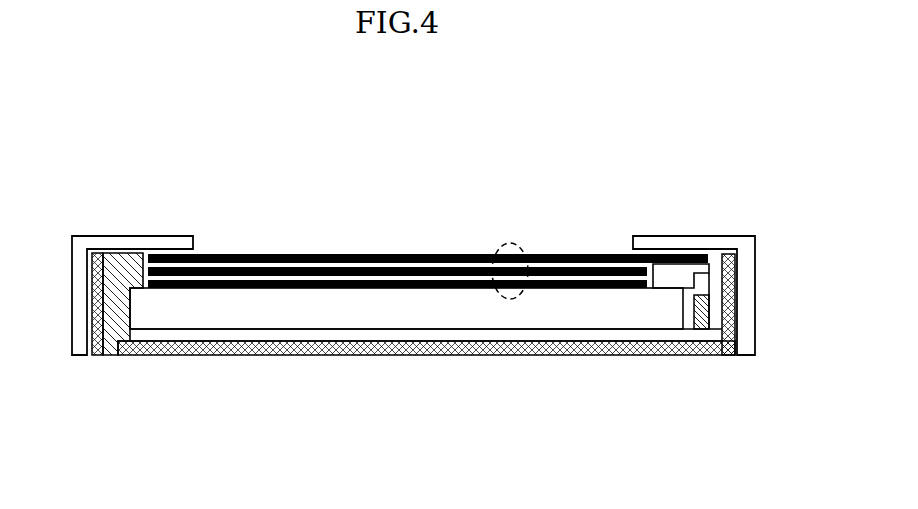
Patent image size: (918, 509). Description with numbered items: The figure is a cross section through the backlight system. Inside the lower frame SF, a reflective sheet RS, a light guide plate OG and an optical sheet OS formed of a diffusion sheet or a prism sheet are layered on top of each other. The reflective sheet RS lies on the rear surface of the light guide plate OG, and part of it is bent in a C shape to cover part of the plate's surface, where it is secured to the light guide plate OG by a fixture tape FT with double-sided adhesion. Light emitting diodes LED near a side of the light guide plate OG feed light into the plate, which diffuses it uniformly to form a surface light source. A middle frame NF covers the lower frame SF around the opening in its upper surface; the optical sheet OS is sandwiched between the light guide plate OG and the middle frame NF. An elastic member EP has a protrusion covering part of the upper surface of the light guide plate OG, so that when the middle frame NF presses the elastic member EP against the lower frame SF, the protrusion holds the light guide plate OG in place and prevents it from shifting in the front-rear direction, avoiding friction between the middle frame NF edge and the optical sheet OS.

The middle frame NF is at (80, 249).
The elastic member EP is at (120, 267).
The lower frame SF is at (222, 348).
The reflective sheet RS is at (333, 335).
The light guide plate OG is at (442, 313).
The optical sheet OS is at (510, 300).
The fixture tape FT is at (673, 282).
The light emitting diode LED is at (703, 318).